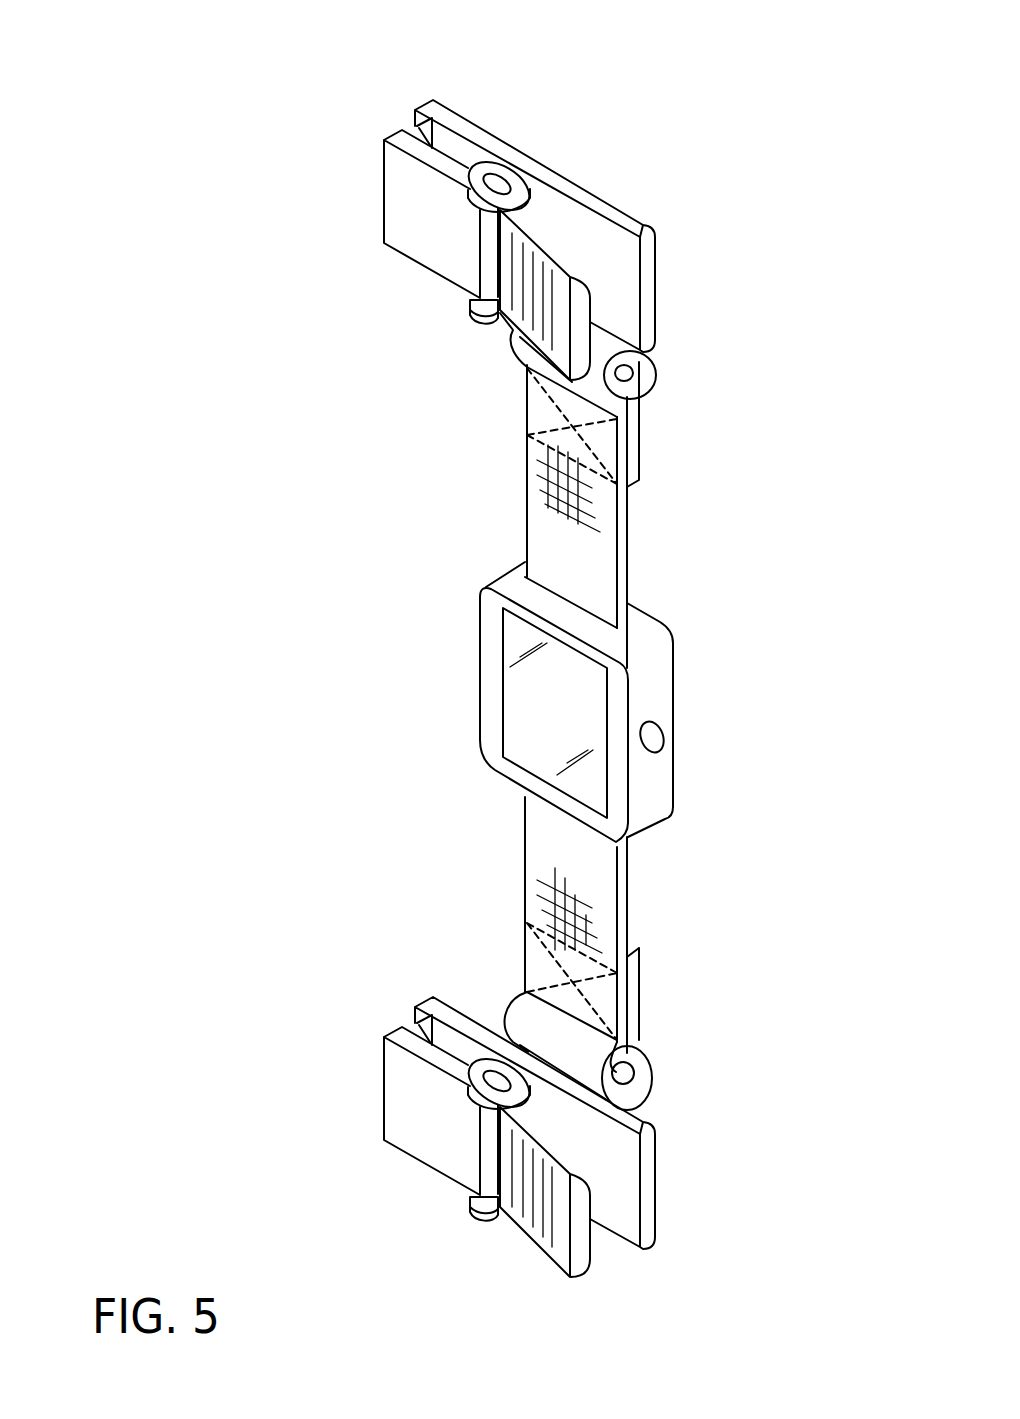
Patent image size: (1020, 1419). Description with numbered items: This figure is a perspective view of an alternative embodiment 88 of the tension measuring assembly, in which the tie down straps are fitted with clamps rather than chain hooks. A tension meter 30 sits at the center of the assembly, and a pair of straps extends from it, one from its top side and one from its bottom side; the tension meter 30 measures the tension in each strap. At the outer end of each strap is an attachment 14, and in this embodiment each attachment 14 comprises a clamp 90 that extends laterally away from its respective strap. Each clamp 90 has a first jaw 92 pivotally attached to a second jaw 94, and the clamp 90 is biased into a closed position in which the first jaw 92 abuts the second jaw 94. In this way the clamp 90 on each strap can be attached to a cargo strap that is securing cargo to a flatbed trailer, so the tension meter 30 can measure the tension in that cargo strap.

The alternative embodiment 88 is at (272, 174).
The attachment 14 is at (632, 176).
The tension meter 30 is at (697, 648).
The clamp 90 is at (517, 122).
The first jaw 92 is at (422, 240).
The second jaw 94 is at (453, 108).